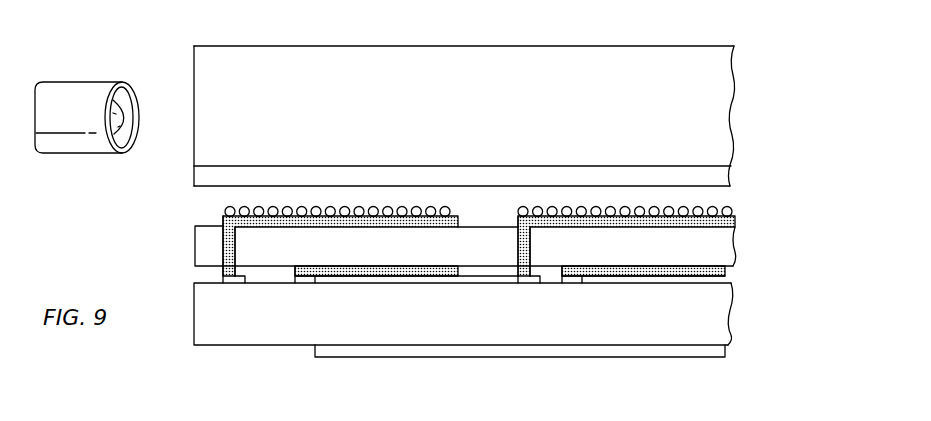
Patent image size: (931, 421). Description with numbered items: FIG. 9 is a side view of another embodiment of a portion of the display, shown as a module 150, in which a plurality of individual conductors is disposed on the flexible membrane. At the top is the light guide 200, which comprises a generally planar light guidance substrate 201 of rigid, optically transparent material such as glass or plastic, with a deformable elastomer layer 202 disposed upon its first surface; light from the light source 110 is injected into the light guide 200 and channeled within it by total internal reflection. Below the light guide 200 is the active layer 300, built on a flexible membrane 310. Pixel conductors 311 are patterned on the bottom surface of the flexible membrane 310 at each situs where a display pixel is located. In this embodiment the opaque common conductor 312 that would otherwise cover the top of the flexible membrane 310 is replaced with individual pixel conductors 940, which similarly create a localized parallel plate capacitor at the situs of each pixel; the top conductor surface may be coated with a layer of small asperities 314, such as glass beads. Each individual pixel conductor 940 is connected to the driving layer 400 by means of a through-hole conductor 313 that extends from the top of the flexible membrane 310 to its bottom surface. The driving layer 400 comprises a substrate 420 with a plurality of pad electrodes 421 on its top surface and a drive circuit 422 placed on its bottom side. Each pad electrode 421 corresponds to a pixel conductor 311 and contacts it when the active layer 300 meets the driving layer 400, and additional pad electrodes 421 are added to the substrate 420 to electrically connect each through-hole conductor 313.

The module 150 is at (123, 53).
The light source 110 is at (80, 155).
The light guide 200 is at (810, 47).
The light guidance substrate 201 is at (734, 66).
The deformable elastomer layer 202 is at (732, 174).
The active layer 300 is at (810, 207).
The flexible membrane 310 is at (735, 251).
The pixel conductors 311 is at (396, 268).
The common conductor 312 is at (228, 217).
The through-hole conductor 313 is at (222, 240).
The small asperities 314 is at (730, 210).
The individual pixel conductors 940 is at (736, 222).
The driving layer 400 is at (810, 280).
The substrate 420 is at (731, 311).
The pad electrodes 421 is at (231, 285).
The drive circuit 422 is at (726, 351).